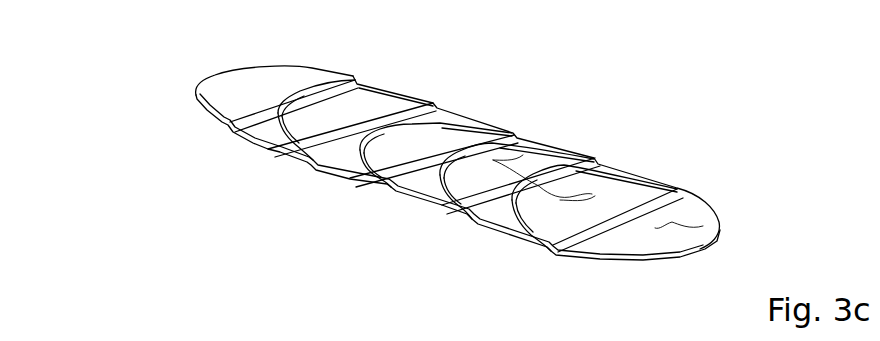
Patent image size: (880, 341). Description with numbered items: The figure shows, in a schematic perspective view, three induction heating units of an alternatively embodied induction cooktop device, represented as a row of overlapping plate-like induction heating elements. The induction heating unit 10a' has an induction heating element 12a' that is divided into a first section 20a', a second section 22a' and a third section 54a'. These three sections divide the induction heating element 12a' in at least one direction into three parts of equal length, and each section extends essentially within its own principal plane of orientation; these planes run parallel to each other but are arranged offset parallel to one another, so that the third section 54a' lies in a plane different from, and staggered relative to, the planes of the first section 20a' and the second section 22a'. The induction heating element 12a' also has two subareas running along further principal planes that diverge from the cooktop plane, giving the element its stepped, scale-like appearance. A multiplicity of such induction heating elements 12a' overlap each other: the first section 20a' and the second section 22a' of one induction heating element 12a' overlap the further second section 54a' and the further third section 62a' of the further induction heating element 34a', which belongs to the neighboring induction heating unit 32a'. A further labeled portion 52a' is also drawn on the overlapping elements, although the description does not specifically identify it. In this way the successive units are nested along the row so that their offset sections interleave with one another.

The induction heating unit 10a' is at (525, 164).
The induction heating element 12a' is at (458, 205).
The first section 20a' is at (566, 132).
The second section 22a' is at (638, 167).
The induction heating unit 32a' is at (458, 129).
The further induction heating element 34a' is at (374, 188).
The hinge element 52a' is at (516, 125).
The third section 54a' is at (740, 195).
The further third section 62a' is at (562, 238).